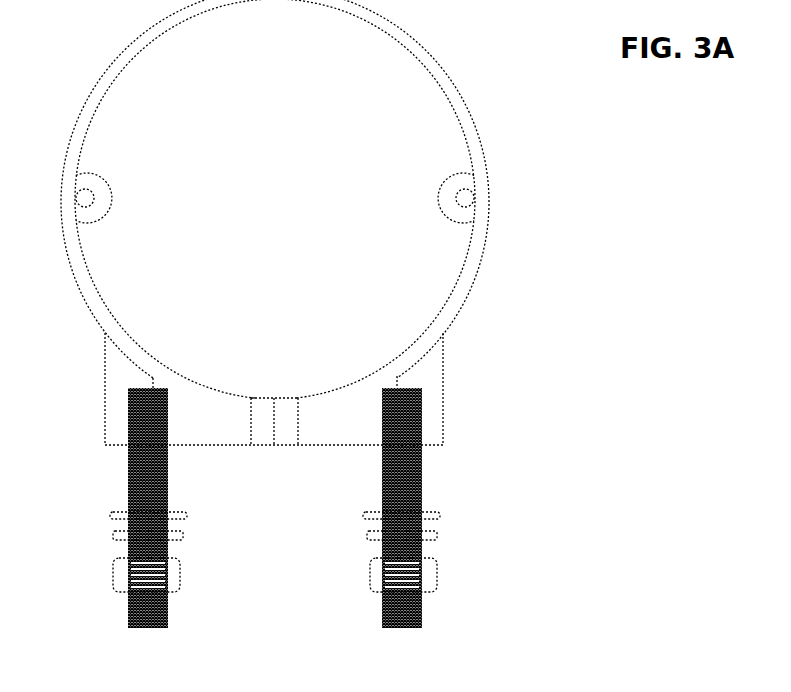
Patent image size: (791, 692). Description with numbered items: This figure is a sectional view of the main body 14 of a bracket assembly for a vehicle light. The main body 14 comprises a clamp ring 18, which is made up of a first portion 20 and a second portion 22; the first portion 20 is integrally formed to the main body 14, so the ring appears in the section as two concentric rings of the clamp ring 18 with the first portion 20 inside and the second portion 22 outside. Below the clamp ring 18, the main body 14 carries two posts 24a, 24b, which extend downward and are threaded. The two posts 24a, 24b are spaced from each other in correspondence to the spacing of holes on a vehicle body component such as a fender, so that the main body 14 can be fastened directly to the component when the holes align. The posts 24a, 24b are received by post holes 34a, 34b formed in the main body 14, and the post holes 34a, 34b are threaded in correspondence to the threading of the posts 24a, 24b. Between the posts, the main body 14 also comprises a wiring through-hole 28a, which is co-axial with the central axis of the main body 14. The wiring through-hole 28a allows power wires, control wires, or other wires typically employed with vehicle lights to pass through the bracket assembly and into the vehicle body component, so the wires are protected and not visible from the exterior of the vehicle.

The main body 14 is at (319, 321).
The clamp ring 18 is at (327, 199).
The first portion 20 is at (471, 286).
The second portion 22 is at (443, 66).
The post 24a is at (116, 515).
The post 24b is at (434, 515).
The wiring through-hole 28a is at (262, 407).
The post hole 34a is at (128, 416).
The post hole 34b is at (422, 416).